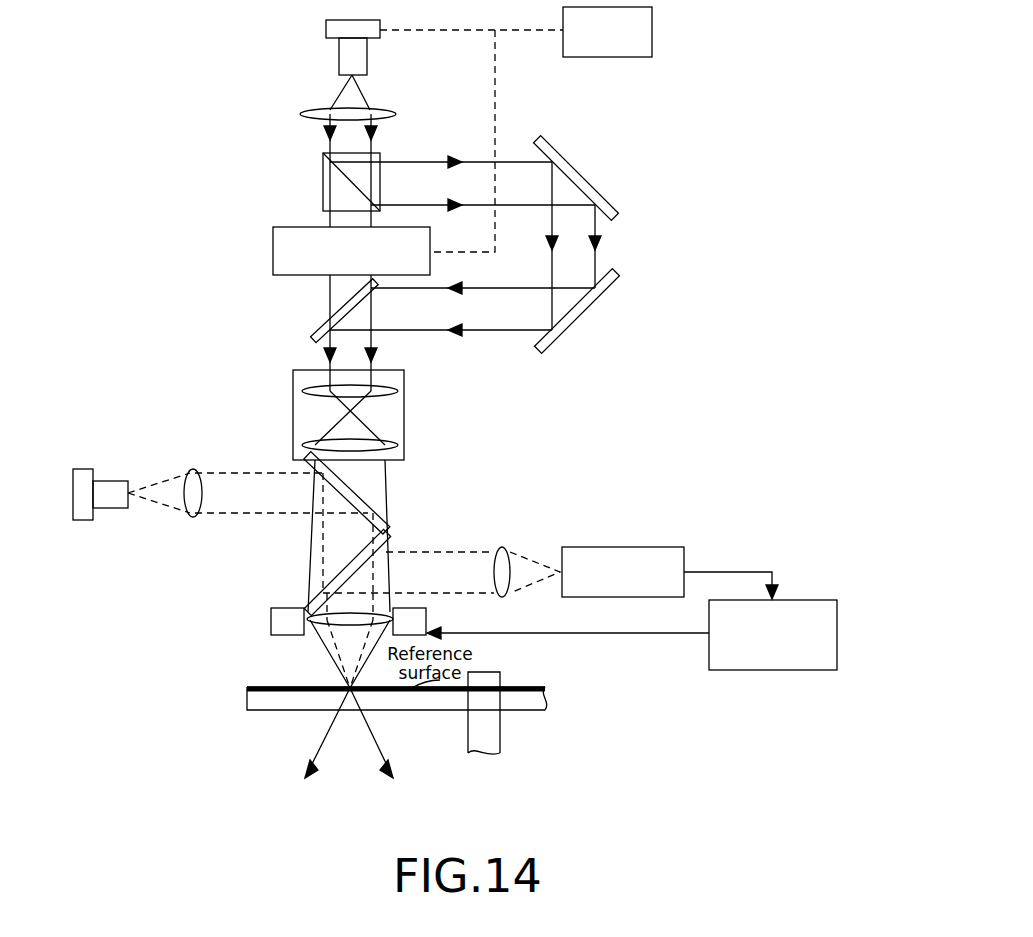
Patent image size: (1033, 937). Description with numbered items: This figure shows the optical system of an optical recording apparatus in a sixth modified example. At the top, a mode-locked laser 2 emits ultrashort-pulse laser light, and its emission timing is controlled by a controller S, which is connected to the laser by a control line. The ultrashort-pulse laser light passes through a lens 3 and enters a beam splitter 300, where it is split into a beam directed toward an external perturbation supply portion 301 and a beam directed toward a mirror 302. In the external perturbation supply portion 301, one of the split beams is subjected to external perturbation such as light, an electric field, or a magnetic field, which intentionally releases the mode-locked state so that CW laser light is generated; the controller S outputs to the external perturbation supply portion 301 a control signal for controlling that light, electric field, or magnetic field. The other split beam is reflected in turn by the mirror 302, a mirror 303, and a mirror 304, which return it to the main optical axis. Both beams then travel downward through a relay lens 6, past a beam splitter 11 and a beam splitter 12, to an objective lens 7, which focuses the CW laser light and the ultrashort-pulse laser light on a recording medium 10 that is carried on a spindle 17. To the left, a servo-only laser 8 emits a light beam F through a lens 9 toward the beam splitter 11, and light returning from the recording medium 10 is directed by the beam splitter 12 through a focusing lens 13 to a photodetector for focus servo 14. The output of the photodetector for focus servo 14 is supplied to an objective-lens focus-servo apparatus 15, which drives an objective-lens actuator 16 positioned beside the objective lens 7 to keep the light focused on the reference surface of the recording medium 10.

The mode-locked laser 2 is at (326, 30).
The lens 3 is at (398, 113).
The controller S is at (654, 32).
The beam splitter 300 is at (323, 178).
The external perturbation supply portion 301 is at (273, 250).
The mirror 302 is at (580, 173).
The mirror 303 is at (585, 316).
The mirror 304 is at (315, 321).
The relay lens 6 is at (405, 412).
The beam splitter 11 is at (362, 492).
The beam splitter 12 is at (342, 560).
The servo-only laser 8 is at (83, 469).
The lens 9 is at (193, 469).
The focus detection light beam F is at (170, 506).
The focusing lens 13 is at (506, 548).
The photodetector for focus servo 14 is at (596, 547).
The objective-lens focus-servo apparatus 15 is at (775, 672).
The objective-lens actuator 16 is at (427, 614).
The objective lens 7 is at (313, 627).
The recording medium 10 is at (247, 698).
The spindle 17 is at (500, 737).